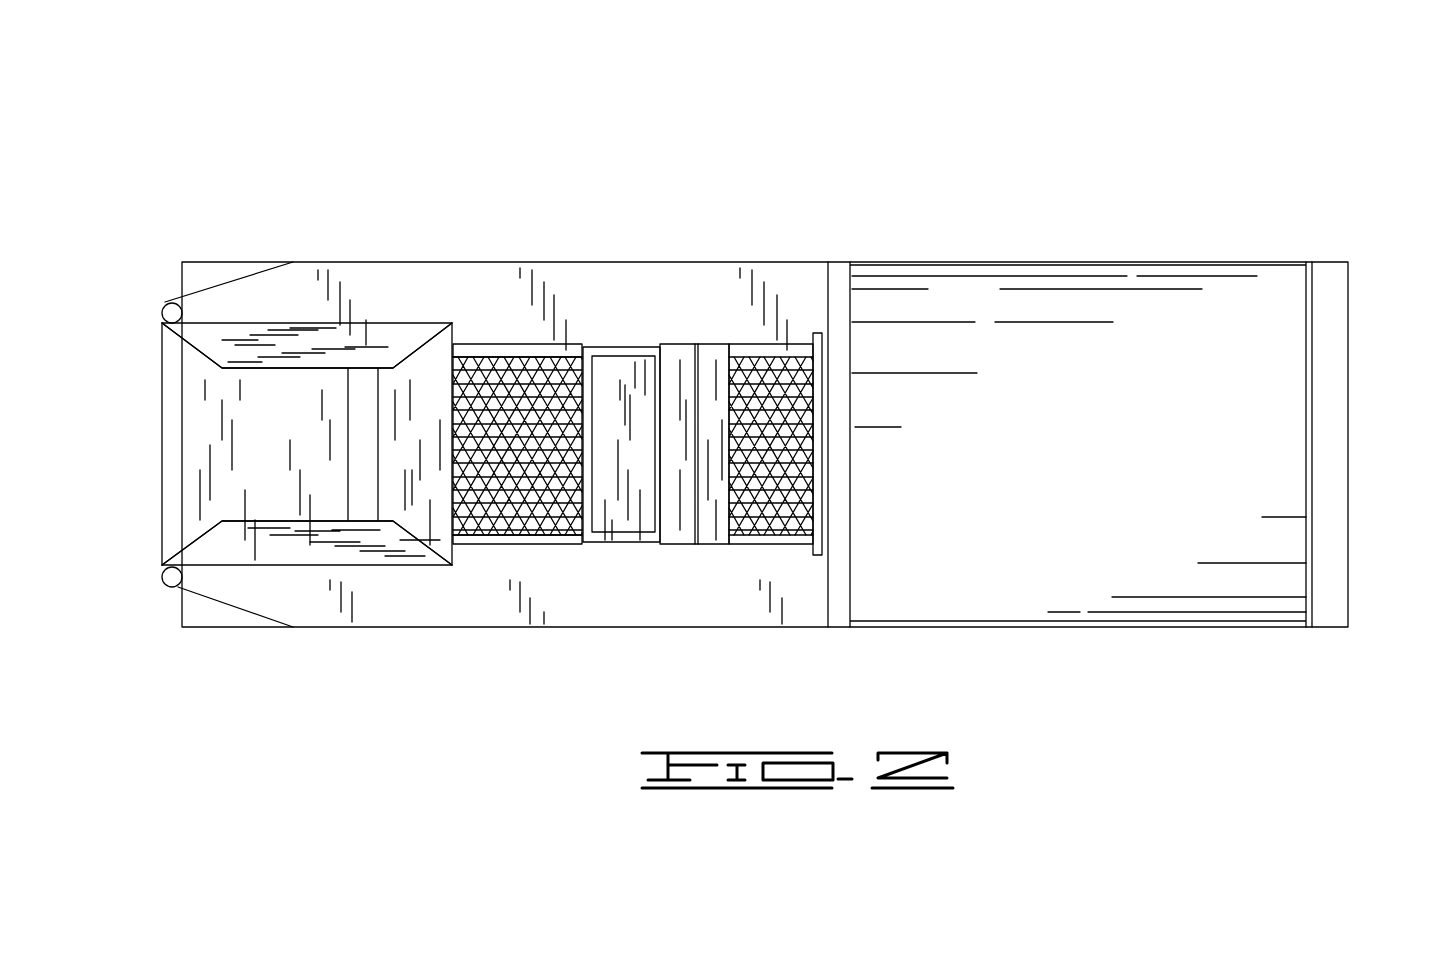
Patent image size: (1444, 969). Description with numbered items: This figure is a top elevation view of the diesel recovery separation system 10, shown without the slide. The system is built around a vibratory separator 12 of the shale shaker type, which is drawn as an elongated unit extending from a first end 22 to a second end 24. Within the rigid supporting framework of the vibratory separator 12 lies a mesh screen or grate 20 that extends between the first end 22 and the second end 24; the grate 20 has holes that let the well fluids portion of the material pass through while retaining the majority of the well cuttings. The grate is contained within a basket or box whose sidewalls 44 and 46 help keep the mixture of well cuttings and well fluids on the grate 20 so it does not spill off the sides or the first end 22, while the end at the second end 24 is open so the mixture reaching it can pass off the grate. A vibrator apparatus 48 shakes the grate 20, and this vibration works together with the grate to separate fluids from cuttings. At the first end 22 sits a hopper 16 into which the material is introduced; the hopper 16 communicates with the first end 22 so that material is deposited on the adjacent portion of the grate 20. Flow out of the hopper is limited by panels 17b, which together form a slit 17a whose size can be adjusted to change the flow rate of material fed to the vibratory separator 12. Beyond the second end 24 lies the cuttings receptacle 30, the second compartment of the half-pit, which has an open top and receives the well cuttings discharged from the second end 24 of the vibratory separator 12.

The separation system 10 is at (1240, 95).
The vibratory separator 12 is at (672, 522).
The hopper 16 is at (227, 555).
The slit 17a is at (369, 372).
The panels 17b is at (215, 336).
The grate 20 is at (790, 360).
The first end 22 is at (480, 520).
The second end 24 is at (795, 530).
The cuttings receptacle 30 is at (1240, 382).
The sidewall 44 is at (560, 540).
The sidewall 46 is at (532, 350).
The vibrator apparatus 48 is at (707, 365).